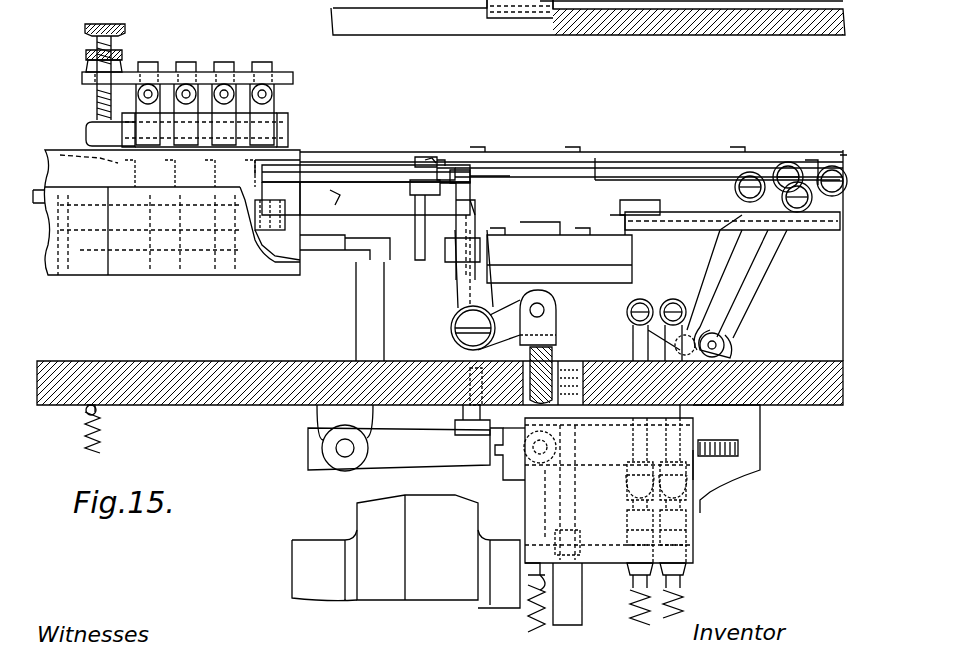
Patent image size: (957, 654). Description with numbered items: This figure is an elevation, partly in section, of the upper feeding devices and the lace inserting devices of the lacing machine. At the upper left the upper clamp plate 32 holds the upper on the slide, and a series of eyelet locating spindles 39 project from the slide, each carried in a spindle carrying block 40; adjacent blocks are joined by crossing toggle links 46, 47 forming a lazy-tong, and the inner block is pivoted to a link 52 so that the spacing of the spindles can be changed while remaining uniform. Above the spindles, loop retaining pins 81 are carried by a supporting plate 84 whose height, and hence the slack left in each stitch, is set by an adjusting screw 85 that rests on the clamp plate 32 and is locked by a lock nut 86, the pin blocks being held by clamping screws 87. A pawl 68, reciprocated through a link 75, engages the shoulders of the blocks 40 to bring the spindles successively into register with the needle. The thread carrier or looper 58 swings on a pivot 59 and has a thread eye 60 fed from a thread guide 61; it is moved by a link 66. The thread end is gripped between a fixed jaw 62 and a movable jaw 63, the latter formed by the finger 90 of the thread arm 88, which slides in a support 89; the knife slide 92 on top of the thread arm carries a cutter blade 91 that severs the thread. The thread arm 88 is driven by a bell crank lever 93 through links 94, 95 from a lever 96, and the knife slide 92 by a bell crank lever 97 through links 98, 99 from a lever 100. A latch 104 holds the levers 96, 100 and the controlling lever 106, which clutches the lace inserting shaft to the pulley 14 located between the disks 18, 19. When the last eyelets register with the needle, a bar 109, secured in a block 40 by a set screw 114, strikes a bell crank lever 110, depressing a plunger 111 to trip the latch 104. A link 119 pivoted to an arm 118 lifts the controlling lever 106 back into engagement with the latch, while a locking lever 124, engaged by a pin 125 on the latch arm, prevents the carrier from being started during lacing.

The pulley 14 is at (417, 547).
The disk 18 is at (324, 565).
The disk 19 is at (499, 569).
The clamp plate 32 is at (92, 133).
The spindles 39 is at (280, 118).
The spindle carrying block 40 is at (205, 258).
The toggle link 46 is at (264, 218).
The toggle link 47 is at (268, 235).
The link 52 is at (62, 276).
The thread carrier or looper 58 is at (340, 166).
The pivot 59 is at (470, 175).
The thread eye 60 is at (300, 152).
The thread guide 61 is at (440, 195).
The fixed jaw 62 is at (446, 164).
The movable jaw 63 is at (430, 158).
The link 66 is at (637, 205).
The pawl 68 is at (547, 222).
The link 75 is at (672, 222).
The loop retaining pins 81 is at (224, 94).
The supporting plate 84 is at (207, 66).
The adjusting screw 85 is at (118, 36).
The lock nut 86 is at (88, 62).
The clamping screws 87 is at (150, 62).
The thread arm 88 is at (632, 162).
The support 89 is at (565, 168).
The finger 90 is at (420, 158).
The cutter blade 91 is at (437, 158).
The knife slide 92 is at (512, 150).
The bell crank lever 93 is at (712, 270).
The link 94 is at (767, 178).
The link 95 is at (628, 306).
The lever 96 is at (630, 540).
The bell crank lever 97 is at (760, 272).
The link 98 is at (812, 180).
The link 99 is at (700, 418).
The lever 100 is at (690, 538).
The latch 104 is at (530, 506).
The controlling lever 106 is at (540, 532).
The bar 109 is at (322, 190).
The bell crank lever 110 is at (468, 286).
The plunger 111 is at (556, 330).
The set screw 114 is at (89, 165).
The arm 118 is at (544, 352).
The link 119 is at (570, 508).
The locking lever 124 is at (442, 450).
The pin 125 is at (540, 462).